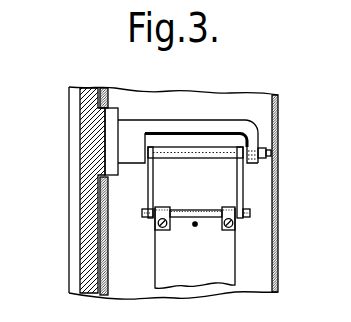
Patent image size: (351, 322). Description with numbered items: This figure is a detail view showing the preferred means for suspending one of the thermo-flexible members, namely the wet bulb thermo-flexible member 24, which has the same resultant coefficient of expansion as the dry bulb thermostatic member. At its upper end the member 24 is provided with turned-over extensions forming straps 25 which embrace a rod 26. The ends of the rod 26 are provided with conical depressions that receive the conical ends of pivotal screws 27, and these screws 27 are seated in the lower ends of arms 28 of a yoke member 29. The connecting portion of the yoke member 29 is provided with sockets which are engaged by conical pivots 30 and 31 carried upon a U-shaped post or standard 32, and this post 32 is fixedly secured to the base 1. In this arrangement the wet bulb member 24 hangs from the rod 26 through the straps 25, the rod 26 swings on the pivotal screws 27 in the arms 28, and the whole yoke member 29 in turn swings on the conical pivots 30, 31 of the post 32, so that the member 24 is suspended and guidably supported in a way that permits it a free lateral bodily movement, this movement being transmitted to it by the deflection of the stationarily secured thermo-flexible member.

The base 1 is at (85, 194).
The wet bulb thermo-flexible member 24 is at (228, 273).
The straps 25 is at (167, 208).
The rod 26 is at (194, 211).
The pivotal screws 27 is at (143, 211).
The arms 28 is at (152, 187).
The yoke member 29 is at (208, 152).
The conical pivot 30 is at (146, 152).
The conical pivot 31 is at (271, 153).
The U-shaped post or standard 32 is at (186, 128).